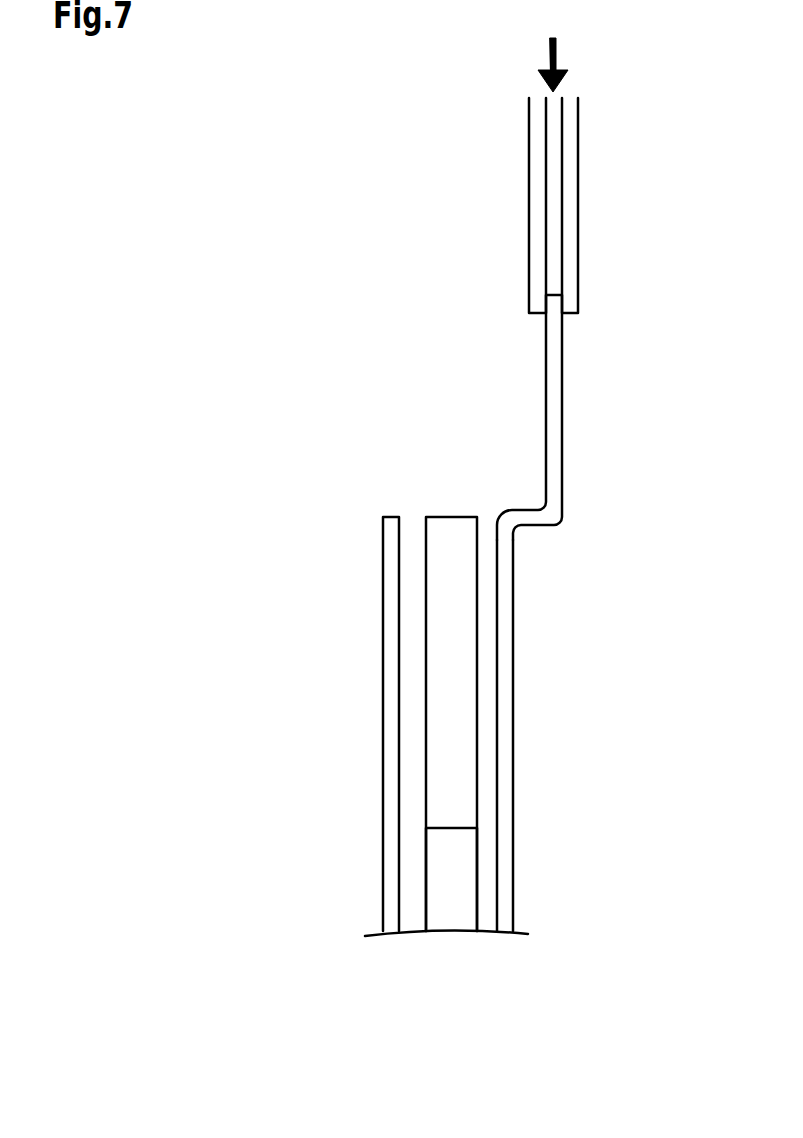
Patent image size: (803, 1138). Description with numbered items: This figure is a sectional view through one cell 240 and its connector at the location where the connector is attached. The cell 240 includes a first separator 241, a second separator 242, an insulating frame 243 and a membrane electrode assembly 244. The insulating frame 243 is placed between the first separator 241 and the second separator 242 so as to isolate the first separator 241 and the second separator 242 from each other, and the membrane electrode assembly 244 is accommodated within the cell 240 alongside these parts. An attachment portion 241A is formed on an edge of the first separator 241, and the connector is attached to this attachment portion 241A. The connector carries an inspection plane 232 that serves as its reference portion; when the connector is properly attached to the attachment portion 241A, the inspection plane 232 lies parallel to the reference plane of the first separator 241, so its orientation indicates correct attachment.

The inspection plane 232 is at (535, 268).
The cell 240 is at (352, 447).
The first separator 241 is at (510, 680).
The attachment portion 241A is at (553, 395).
The second separator 242 is at (390, 682).
The insulating frame 243 is at (455, 528).
The membrane electrode assembly 244 is at (457, 900).